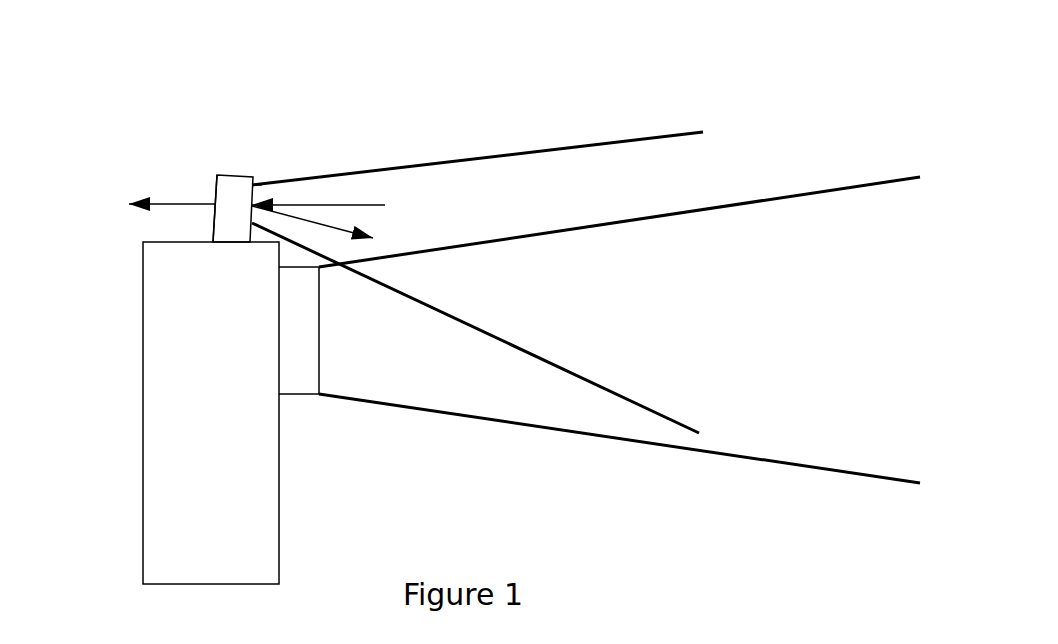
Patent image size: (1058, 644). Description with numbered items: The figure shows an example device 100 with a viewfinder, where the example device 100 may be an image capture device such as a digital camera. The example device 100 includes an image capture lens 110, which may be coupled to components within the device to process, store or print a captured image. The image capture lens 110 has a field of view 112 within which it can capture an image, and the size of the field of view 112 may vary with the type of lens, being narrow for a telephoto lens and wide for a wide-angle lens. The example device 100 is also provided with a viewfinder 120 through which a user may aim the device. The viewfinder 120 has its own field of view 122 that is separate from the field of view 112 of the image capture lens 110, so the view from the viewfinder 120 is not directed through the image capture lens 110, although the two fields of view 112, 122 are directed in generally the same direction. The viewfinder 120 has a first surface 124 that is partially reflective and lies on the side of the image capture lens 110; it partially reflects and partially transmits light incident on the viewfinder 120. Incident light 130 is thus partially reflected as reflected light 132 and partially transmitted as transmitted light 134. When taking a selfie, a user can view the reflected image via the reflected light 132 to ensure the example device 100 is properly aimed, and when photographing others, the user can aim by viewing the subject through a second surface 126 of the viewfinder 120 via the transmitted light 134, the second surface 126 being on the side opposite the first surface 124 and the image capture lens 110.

The example device 100 is at (162, 108).
The image capture lens 110 is at (297, 395).
The field of view 112 is at (558, 432).
The viewfinder 120 is at (237, 175).
The field of view 122 is at (565, 147).
The first surface 124 is at (268, 185).
The second surface 126 is at (216, 190).
The incident light 130 is at (348, 205).
The reflected light 132 is at (340, 228).
The transmitted light 134 is at (178, 205).